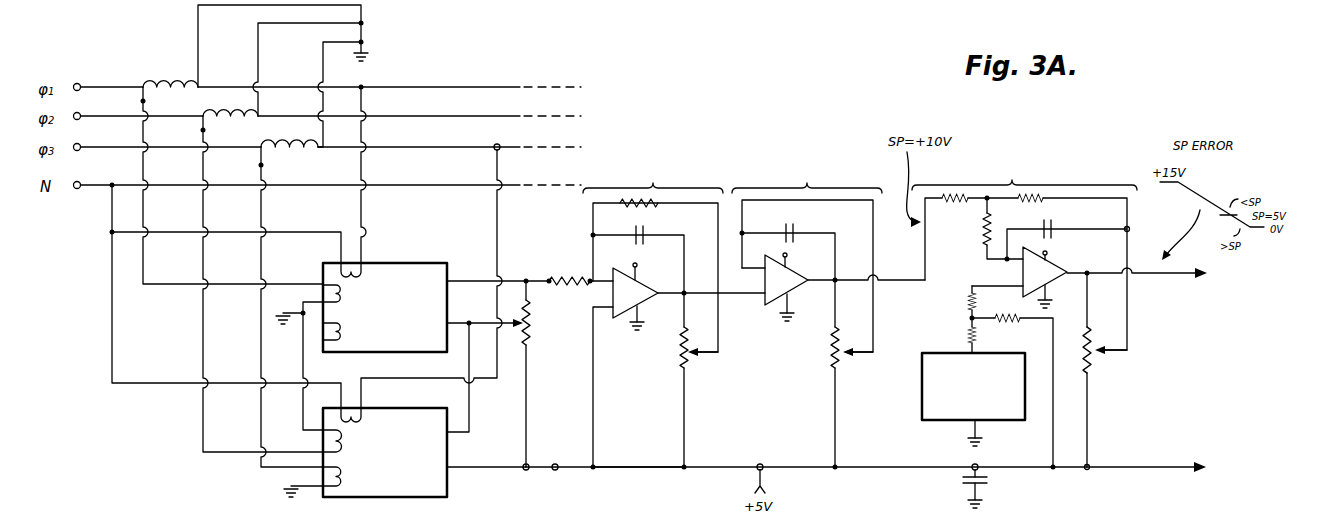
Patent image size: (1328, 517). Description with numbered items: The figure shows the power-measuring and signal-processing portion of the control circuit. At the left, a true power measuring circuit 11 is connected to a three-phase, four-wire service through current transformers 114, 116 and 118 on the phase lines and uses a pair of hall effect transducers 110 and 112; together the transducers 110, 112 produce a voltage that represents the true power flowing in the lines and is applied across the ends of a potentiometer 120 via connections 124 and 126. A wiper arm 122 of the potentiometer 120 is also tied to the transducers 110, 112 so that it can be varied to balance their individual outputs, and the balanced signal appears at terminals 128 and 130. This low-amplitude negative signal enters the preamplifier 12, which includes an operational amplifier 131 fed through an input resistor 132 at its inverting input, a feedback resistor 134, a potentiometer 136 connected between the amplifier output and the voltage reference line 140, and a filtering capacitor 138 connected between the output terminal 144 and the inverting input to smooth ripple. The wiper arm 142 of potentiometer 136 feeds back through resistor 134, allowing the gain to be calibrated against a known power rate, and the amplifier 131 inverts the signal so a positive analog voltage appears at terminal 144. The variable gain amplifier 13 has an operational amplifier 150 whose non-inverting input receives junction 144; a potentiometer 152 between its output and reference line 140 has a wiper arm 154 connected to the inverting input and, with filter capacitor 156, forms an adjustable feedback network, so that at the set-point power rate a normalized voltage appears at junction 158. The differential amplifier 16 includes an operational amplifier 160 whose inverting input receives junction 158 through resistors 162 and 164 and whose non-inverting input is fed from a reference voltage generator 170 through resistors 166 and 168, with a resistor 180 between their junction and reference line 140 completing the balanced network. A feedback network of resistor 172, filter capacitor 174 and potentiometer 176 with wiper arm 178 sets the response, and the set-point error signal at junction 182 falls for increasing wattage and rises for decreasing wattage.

The true power measuring circuit 11 is at (180, 430).
The preamplifier 12 is at (655, 184).
The variable gain amplifier 13 is at (808, 184).
The differential amplifier 16 is at (1019, 184).
The hall effect transducer 110 is at (389, 262).
The hall effect transducer 112 is at (391, 407).
The current transformer 114 is at (182, 81).
The current transformer 116 is at (242, 111).
The inductor phase 3 118 is at (299, 141).
The potentiometer 120 is at (534, 328).
The wiper arm 122 is at (518, 330).
The connection 124 is at (480, 275).
The connection 126 is at (479, 467).
The terminal 128 is at (549, 280).
The terminal 130 is at (556, 470).
The operational amplifier 131 is at (627, 321).
The input resistor 132 is at (574, 287).
The feedback resistor 134 is at (648, 208).
The potentiometer 136 is at (678, 367).
The filtering capacitor 138 is at (632, 235).
The voltage reference line 140 is at (642, 470).
The wiper arm 142 is at (716, 355).
The output terminal 144 is at (686, 291).
The operational amplifier 150 is at (782, 309).
The potentiometer 152 is at (830, 367).
The wiper arm 154 is at (869, 355).
The filter capacitor 156 is at (802, 232).
The junction 158 is at (836, 278).
The operational amplifier 160 is at (1052, 279).
The resistor 162 is at (956, 210).
The resistor 164 is at (974, 236).
The resistor 166 is at (968, 336).
The resistor 168 is at (967, 303).
The reference voltage generator 170 is at (1004, 420).
The resistor 172 is at (1048, 204).
The filter capacitor 174 is at (1056, 229).
The potentiometer 176 is at (1097, 360).
The wiper arm 178 is at (1118, 349).
The resistor 180 is at (1005, 318).
The junction 182 is at (1090, 272).